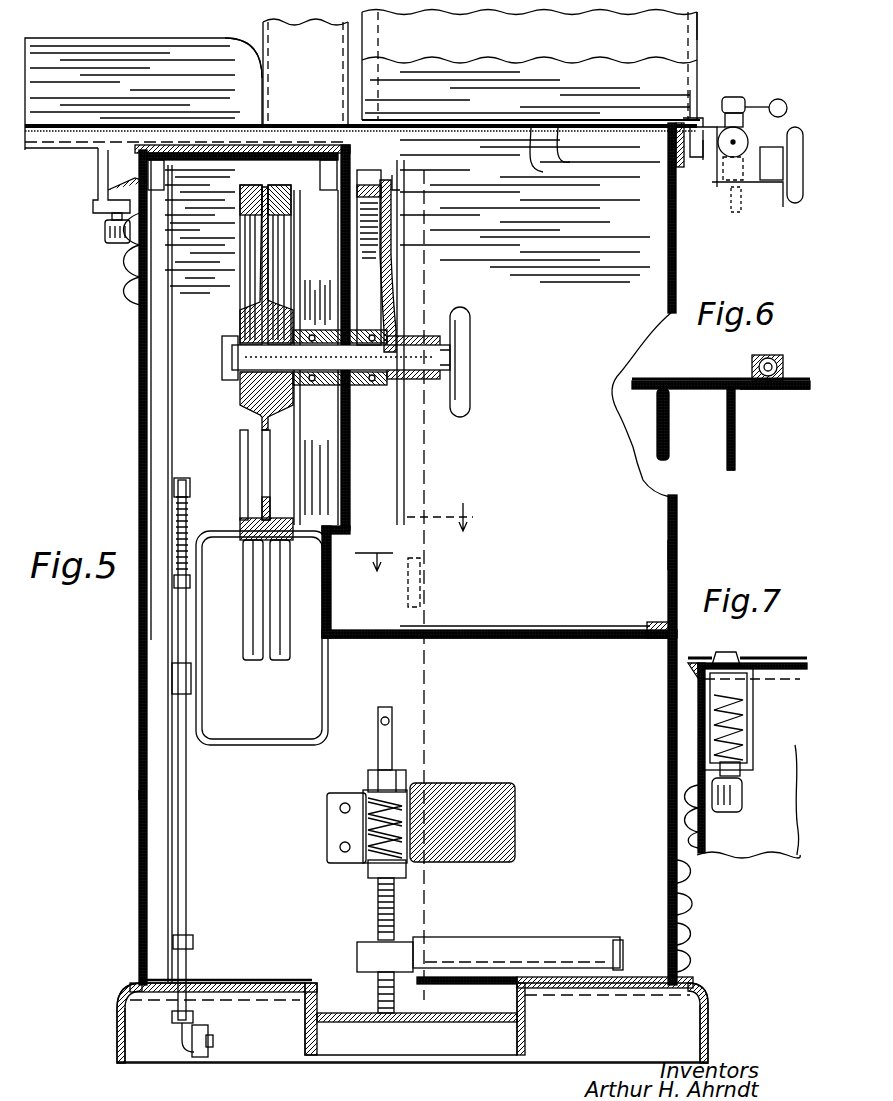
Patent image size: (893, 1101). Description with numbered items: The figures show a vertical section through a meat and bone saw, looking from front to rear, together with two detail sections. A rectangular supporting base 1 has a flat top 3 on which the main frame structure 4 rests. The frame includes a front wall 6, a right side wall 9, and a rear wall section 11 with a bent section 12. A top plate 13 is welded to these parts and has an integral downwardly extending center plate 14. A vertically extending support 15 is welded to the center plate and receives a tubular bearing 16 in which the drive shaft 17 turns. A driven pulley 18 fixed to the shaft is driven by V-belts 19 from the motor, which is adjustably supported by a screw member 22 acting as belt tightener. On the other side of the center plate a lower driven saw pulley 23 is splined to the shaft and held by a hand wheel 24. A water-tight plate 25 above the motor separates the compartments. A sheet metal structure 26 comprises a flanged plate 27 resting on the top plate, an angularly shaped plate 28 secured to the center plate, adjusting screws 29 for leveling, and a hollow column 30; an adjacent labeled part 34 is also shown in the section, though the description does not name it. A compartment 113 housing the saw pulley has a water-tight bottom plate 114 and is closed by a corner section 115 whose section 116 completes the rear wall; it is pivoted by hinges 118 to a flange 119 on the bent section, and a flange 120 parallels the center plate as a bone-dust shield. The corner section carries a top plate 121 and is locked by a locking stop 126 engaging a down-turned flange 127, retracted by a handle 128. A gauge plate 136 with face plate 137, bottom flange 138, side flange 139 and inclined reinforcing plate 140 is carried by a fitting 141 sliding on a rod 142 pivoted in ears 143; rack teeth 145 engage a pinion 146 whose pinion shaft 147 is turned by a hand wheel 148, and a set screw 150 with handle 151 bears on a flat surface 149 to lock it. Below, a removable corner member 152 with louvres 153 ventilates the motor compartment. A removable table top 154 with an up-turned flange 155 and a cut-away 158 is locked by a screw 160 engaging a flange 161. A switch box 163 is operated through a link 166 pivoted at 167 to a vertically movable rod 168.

In FIG. 5, the supporting base 1 is at (430, 1020).
In FIG. 5, the flat top 3 is at (641, 978).
In FIG. 5, the main frame structure 4 is at (130, 799).
In FIG. 7, the main frame structure 4 is at (700, 833).
In FIG. 5, the front wall 6 is at (407, 546).
In FIG. 6, the right side wall 9 is at (685, 380).
In FIG. 5, the rear wall section 11 is at (139, 405).
In FIG. 5, the bent section 12 is at (139, 442).
In FIG. 5, the top plate 13 is at (292, 145).
In FIG. 5, the center plate 14 is at (345, 586).
In FIG. 5, the vertically extending support 15 is at (295, 226).
In FIG. 5, the tubular bearing 16 is at (300, 300).
In FIG. 5, the drive shaft 17 is at (327, 398).
In FIG. 5, the driven pulley 18 is at (240, 478).
In FIG. 5, the V-belts 19 is at (272, 658).
In FIG. 5, the screw member 22 is at (378, 914).
In FIG. 5, the lower driven saw pulley 23 is at (388, 273).
In FIG. 5, the hand wheel 24 is at (470, 400).
In FIG. 5, the plate 25 is at (575, 638).
In FIG. 5, the sheet metal structure 26 is at (257, 37).
In FIG. 5, the flanged plate 27 is at (262, 163).
In FIG. 5, the angularly shaped plate 28 is at (397, 180).
In FIG. 5, the adjusting screws 29 is at (320, 182).
In FIG. 5, the hollow column 30 is at (340, 56).
In FIG. 5, the panel 34 is at (372, 47).
In FIG. 5, the compartment 113 is at (663, 559).
In FIG. 5, the bottom plate 114 is at (369, 630).
In FIG. 5, the corner section 115 is at (684, 252).
In FIG. 6, the corner section 115 is at (743, 473).
In FIG. 7, the corner section 115 is at (755, 758).
In FIG. 5, the section 116 is at (645, 287).
In FIG. 6, the section 116 is at (785, 390).
In FIG. 5, the hinges 118 is at (420, 235).
In FIG. 6, the hinges 118 is at (775, 360).
In FIG. 5, the flange 119 is at (397, 190).
In FIG. 6, the flange 119 is at (690, 390).
In FIG. 5, the flange 120 is at (405, 286).
In FIG. 6, the flange 120 is at (736, 438).
In FIG. 5, the top plate 121 is at (553, 155).
In FIG. 7, the top plate 121 is at (760, 662).
In FIG. 7, the locking stop 126 is at (735, 652).
In FIG. 7, the down-turned flange 127 is at (694, 678).
In FIG. 7, the handle 128 is at (718, 812).
In FIG. 5, the gauge plate 136 is at (707, 20).
In FIG. 5, the face plate 137 is at (625, 34).
In FIG. 5, the bottom flange 138 is at (574, 147).
In FIG. 5, the side flange 139 is at (698, 96).
In FIG. 5, the inclined reinforcing plate 140 is at (684, 137).
In FIG. 5, the fitting 141 is at (712, 155).
In FIG. 5, the rod 142 is at (746, 137).
In FIG. 5, the ears 143 is at (684, 160).
In FIG. 5, the rack teeth 145 is at (772, 156).
In FIG. 5, the pinion 146 is at (738, 190).
In FIG. 5, the pinion shaft 147 is at (712, 172).
In FIG. 5, the hand wheel 148 is at (792, 203).
In FIG. 5, the flat surface 149 is at (744, 130).
In FIG. 5, the set screw 150 is at (714, 124).
In FIG. 5, the handle 151 is at (779, 103).
In FIG. 5, the removable corner member 152 is at (692, 870).
In FIG. 5, the louvres 153 is at (692, 932).
In FIG. 5, the removable table top 154 is at (143, 127).
In FIG. 5, the flange 155 is at (128, 47).
In FIG. 5, the cut-away 158 is at (373, 128).
In FIG. 5, the screw 160 is at (105, 240).
In FIG. 5, the flange 161 is at (110, 183).
In FIG. 5, the switch box 163 is at (327, 683).
In FIG. 5, the link 166 is at (200, 1057).
In FIG. 5, the pivot 167 is at (205, 1033).
In FIG. 5, the vertically movable rod 168 is at (187, 893).